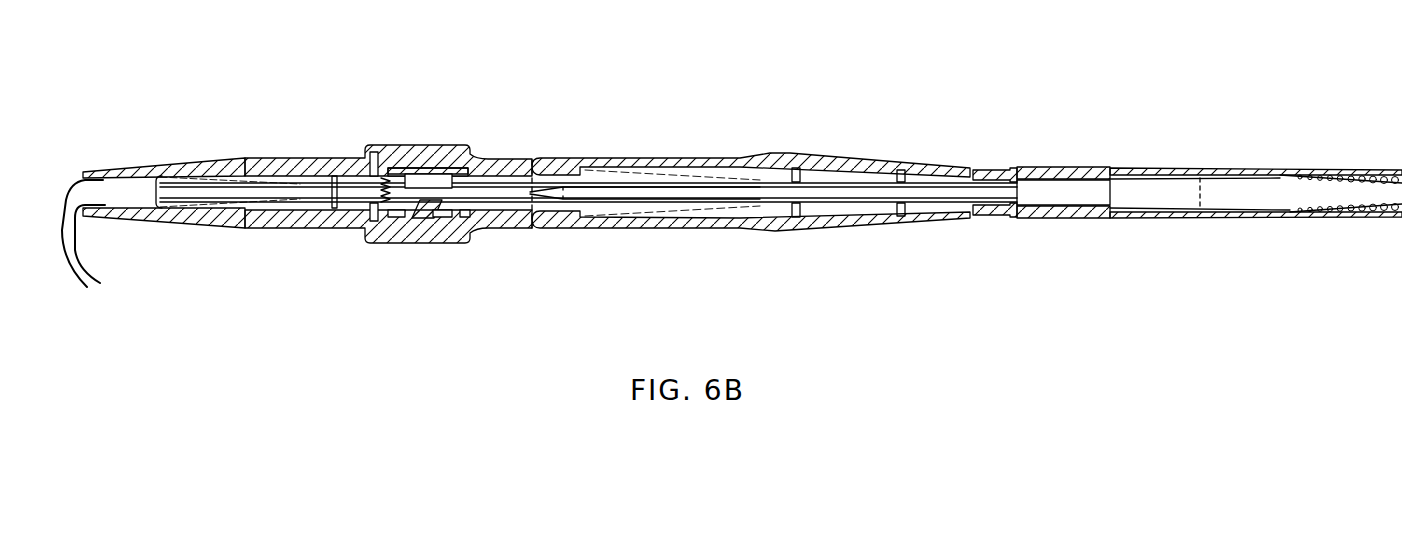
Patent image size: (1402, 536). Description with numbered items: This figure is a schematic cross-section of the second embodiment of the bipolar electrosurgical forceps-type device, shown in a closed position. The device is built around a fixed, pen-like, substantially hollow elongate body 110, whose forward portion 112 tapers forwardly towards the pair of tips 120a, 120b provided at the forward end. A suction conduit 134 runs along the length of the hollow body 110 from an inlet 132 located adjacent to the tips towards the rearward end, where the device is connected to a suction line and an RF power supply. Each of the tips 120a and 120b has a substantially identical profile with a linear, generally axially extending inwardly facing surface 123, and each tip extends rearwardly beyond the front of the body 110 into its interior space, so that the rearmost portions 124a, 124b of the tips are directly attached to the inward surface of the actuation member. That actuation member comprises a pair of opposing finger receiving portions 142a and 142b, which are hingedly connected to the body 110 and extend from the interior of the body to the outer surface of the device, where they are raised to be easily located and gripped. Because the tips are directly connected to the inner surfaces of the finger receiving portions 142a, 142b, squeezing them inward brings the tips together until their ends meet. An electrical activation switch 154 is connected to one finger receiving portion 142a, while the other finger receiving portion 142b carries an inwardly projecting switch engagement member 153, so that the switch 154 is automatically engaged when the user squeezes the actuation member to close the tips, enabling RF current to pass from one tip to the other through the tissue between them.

The elongate body 110 is at (667, 160).
The forward portion of the body 112 is at (385, 202).
The tip 120a is at (133, 171).
The tip 120b is at (165, 228).
The inwardly facing surface 123 is at (100, 254).
The rearmost portion of the tip 124a is at (307, 158).
The rearmost portion of the tip 124b is at (303, 228).
The inlet 132 is at (158, 176).
The conduit 134 is at (610, 170).
The finger receiving portion 142a is at (438, 146).
The finger receiving portion 142b is at (453, 245).
The switch engagement member 153 is at (425, 194).
The electrical activation switch 154 is at (452, 164).